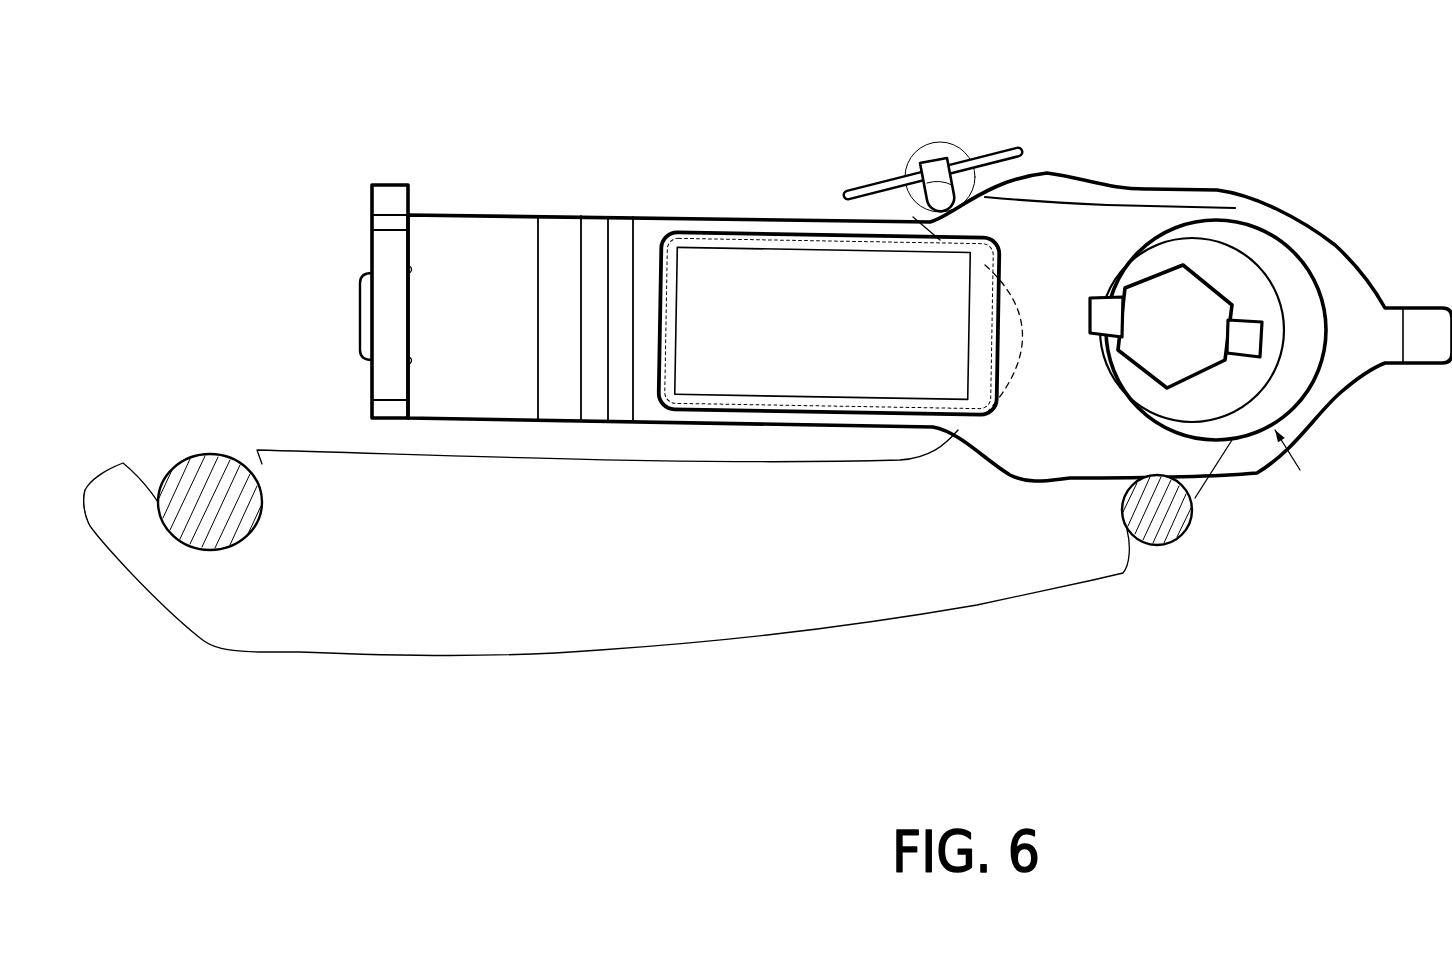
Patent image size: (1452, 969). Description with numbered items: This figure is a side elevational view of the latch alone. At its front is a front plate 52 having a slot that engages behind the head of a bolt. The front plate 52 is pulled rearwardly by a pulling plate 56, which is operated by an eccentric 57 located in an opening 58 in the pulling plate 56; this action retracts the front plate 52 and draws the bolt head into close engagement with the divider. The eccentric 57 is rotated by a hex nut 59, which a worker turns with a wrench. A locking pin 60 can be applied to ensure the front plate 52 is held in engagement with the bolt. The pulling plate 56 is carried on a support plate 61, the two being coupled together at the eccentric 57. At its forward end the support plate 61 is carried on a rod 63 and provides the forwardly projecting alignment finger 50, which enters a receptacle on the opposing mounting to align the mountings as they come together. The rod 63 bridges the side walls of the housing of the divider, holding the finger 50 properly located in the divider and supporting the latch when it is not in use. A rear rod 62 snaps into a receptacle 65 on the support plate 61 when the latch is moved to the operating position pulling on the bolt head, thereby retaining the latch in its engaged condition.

The projecting finger 50 is at (135, 528).
The front plate 52 is at (390, 268).
The pulling plate 56 is at (515, 233).
The eccentric 57 is at (1216, 242).
The opening 58 is at (1300, 258).
The hex nut 59 is at (1153, 345).
The locking pin 60 is at (950, 118).
The support plate 61 is at (773, 600).
The rear rod 62 is at (1170, 522).
The rod 63 is at (205, 480).
The receptacle 65 is at (1195, 498).